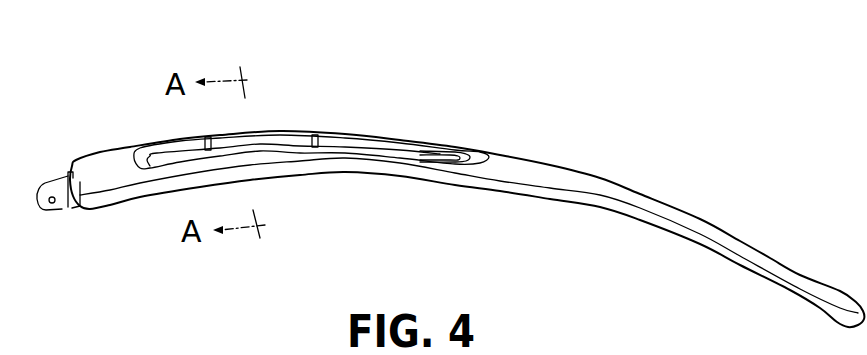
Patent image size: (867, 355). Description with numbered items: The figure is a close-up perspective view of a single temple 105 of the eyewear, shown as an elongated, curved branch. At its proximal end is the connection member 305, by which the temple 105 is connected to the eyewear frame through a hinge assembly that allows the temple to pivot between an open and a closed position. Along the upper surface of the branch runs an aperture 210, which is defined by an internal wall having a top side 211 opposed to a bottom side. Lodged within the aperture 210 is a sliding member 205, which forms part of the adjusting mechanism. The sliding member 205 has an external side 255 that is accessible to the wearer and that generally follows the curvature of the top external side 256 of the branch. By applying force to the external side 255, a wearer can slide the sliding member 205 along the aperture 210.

The temple 105 is at (687, 240).
The sliding member 205 is at (298, 138).
The aperture 210 is at (442, 142).
The top side 211 is at (415, 142).
The external side 255 is at (348, 138).
The top external side 256 is at (633, 200).
The connection member 305 is at (60, 208).